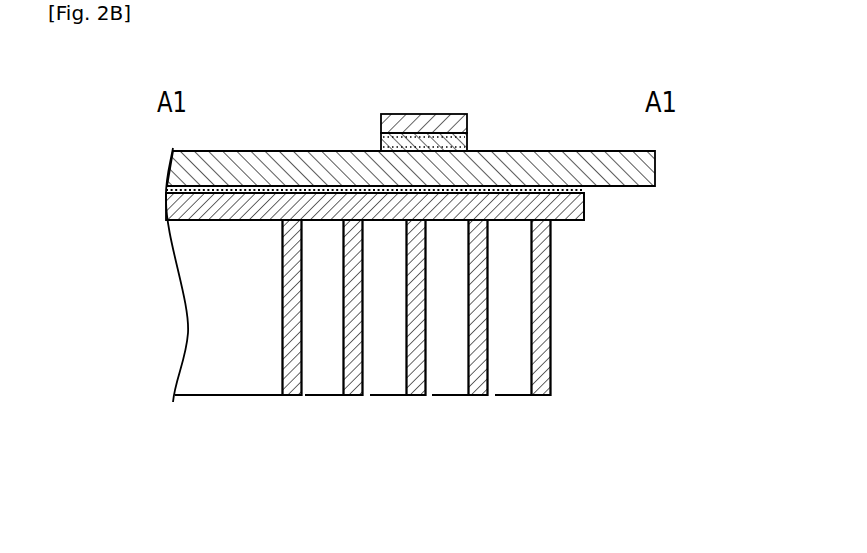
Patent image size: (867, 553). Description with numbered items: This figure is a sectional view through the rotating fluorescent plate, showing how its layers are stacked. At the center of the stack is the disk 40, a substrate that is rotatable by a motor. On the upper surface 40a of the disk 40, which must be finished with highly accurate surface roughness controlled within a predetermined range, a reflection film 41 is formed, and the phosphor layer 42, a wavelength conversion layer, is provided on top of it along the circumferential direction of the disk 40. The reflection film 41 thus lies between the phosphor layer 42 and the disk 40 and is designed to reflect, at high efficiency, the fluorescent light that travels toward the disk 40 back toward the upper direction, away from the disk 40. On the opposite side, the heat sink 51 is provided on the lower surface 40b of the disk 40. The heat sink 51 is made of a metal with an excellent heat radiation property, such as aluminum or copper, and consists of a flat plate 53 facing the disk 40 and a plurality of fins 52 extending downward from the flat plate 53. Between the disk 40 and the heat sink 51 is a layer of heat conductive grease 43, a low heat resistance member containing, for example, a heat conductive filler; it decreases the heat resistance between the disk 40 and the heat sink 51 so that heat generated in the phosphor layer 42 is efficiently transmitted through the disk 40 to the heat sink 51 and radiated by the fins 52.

The disk 40 is at (650, 160).
The upper surface 40a is at (607, 150).
The lower surface 40b is at (628, 186).
The reflection film 41 is at (460, 143).
The phosphor layer 42 is at (460, 123).
The heat conductive grease 43 is at (583, 190).
The heat sink 51 is at (359, 353).
The fins 52 is at (353, 390).
The flat plate 53 is at (168, 208).